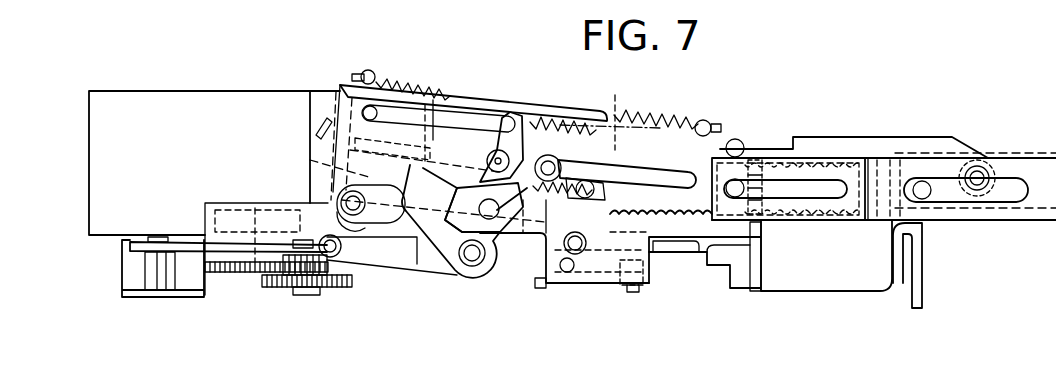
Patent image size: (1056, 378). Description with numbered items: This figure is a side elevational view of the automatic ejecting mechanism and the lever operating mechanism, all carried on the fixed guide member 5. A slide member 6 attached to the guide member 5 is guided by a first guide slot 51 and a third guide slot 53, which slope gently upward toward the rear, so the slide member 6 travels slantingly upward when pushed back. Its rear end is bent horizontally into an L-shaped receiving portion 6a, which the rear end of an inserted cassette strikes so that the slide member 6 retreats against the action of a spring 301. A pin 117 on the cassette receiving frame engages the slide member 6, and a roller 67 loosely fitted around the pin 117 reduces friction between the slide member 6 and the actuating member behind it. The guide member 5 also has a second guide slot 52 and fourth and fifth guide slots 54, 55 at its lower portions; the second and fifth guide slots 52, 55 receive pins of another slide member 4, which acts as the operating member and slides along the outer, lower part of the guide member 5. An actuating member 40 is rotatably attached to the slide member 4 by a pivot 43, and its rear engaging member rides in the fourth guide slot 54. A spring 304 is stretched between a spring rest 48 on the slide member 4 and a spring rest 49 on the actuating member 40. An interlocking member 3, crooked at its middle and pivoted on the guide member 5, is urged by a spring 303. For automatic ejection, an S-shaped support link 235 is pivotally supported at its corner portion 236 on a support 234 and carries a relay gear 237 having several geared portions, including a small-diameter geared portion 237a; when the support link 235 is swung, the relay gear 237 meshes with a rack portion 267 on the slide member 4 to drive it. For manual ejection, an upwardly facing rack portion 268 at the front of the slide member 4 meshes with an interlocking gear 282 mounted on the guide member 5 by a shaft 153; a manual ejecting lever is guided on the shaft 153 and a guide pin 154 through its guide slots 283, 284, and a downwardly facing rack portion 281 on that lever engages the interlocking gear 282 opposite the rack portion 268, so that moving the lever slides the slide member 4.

The guide member 5 is at (265, 103).
The L-shaped receiving portion 6a is at (331, 108).
The slide member 6 is at (500, 104).
The spring 301 is at (395, 92).
The third guide slot 53 is at (433, 113).
The fourth guide slot 54 is at (312, 161).
The actuating member 40 is at (388, 236).
The interlocking member 3 is at (430, 222).
The fifth guide slot 55 is at (438, 255).
The pivot 43 is at (497, 250).
The slide member 4 is at (522, 232).
The spring rest 49 is at (529, 122).
The pin 117 is at (549, 157).
The roller 67 is at (560, 198).
The first guide slot 51 is at (639, 168).
The spring 303 is at (703, 121).
The spring rest 48 is at (580, 243).
The spring 304 is at (541, 235).
The rack portion 268 is at (625, 262).
The second guide slot 52 is at (670, 250).
The shaft 153 is at (753, 222).
The interlocking gear 282 is at (747, 186).
The guide slot 283 is at (823, 198).
The rack portion 281 is at (802, 150).
The guide slot 284 is at (947, 182).
The guide pin 154 is at (930, 196).
The support link 235 is at (256, 240).
The corner portion 236 is at (153, 237).
The support 234 is at (183, 293).
The rack portion 267 is at (231, 273).
The relay gear 237 is at (275, 287).
The geared portion 237a is at (310, 295).